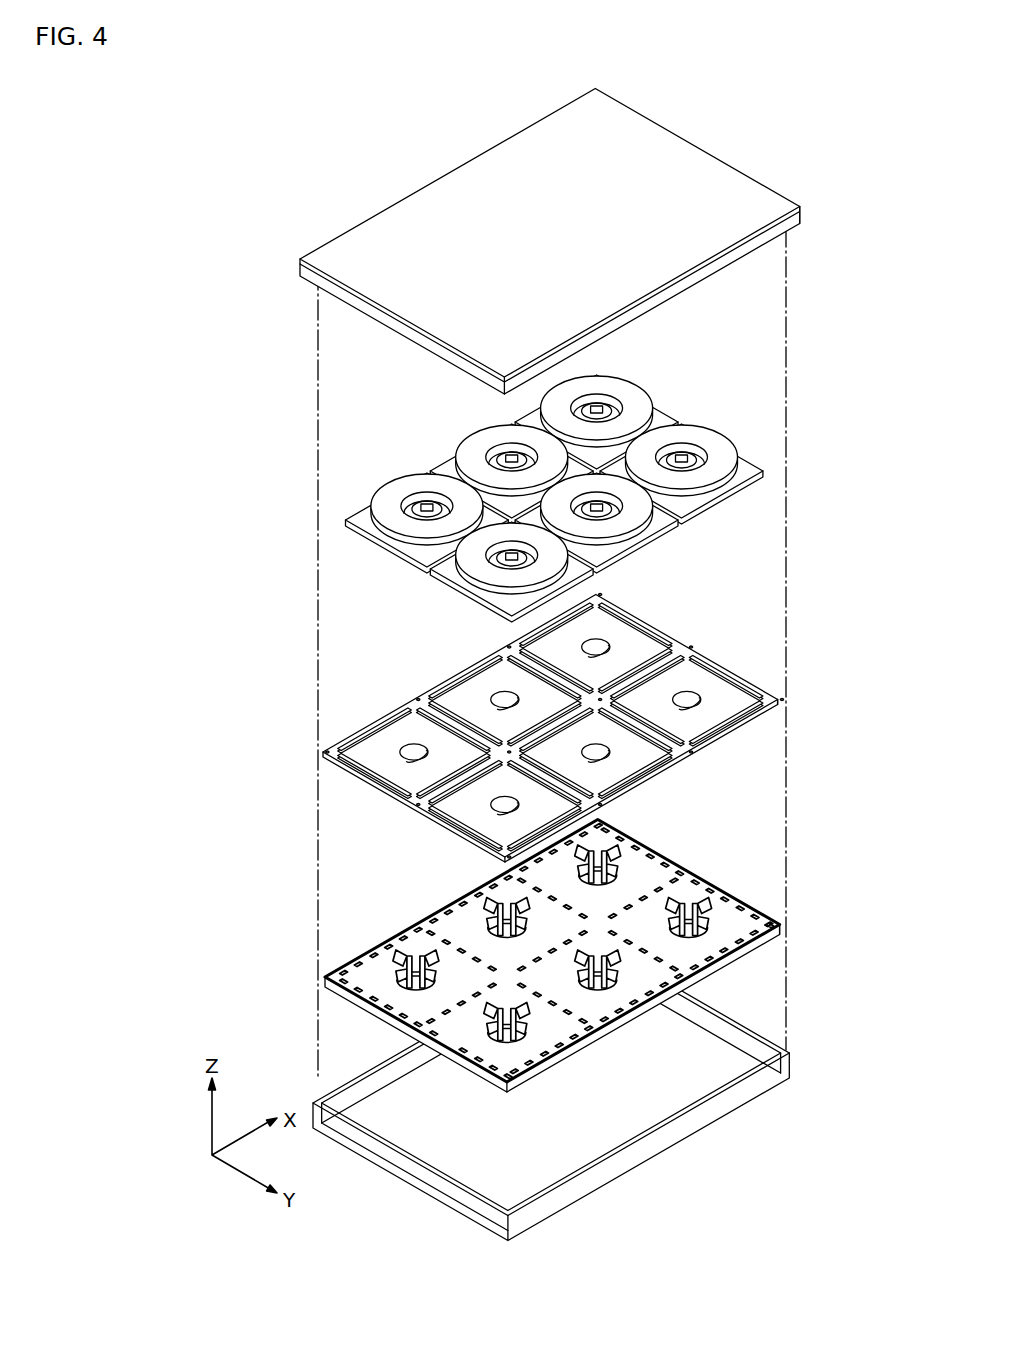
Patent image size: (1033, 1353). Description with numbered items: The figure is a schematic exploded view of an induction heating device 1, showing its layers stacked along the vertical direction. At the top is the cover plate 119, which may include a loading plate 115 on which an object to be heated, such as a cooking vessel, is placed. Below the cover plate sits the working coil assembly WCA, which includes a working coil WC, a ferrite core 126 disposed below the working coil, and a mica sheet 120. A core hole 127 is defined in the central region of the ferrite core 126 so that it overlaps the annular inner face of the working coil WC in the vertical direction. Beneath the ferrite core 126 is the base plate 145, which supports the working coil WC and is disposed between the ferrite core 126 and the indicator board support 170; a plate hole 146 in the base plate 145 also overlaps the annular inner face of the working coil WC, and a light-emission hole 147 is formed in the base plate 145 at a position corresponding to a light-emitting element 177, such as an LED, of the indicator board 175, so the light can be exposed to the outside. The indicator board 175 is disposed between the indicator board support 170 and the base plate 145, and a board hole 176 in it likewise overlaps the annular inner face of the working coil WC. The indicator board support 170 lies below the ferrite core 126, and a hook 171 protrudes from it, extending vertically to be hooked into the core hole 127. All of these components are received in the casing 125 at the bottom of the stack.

The induction heating device 1 is at (350, 108).
The loading plate 115 is at (568, 240).
The cover plate 119 is at (755, 155).
The mica sheet 120 is at (558, 460).
The working coil assembly WCA is at (698, 462).
The working coil WC is at (696, 492).
The core hole 127 is at (697, 507).
The ferrite core 126 is at (711, 508).
The base plate 145 is at (553, 726).
The plate hole 146 is at (420, 750).
The light-emission hole 147 is at (375, 777).
The indicator board support 170 is at (552, 950).
The hook 171 is at (498, 902).
The light-emitting element 177 is at (663, 888).
The indicator board 175 is at (702, 898).
The board hole 176 is at (412, 983).
The casing 125 is at (747, 1107).